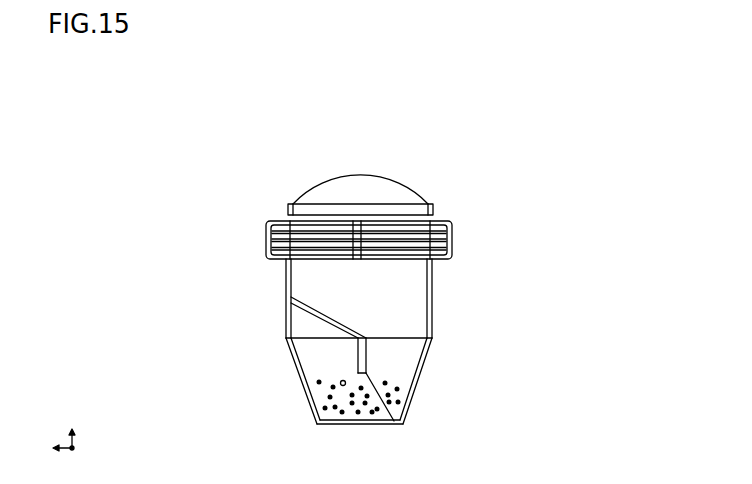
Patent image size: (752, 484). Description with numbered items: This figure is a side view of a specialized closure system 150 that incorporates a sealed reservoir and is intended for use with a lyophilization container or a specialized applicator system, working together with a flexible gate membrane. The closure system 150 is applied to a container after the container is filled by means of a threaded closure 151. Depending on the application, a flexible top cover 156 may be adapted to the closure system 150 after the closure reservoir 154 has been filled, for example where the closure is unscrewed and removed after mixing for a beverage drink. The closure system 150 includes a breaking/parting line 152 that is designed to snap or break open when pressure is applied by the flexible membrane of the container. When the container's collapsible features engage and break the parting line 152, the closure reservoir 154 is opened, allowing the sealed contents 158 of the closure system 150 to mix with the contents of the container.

The closure system 150 is at (528, 200).
The threaded closure 151 is at (270, 253).
The breaking/parting line 152 is at (367, 340).
The closure reservoir 154 is at (416, 308).
The top cover 156 is at (428, 183).
The sealed contents 158 is at (318, 395).